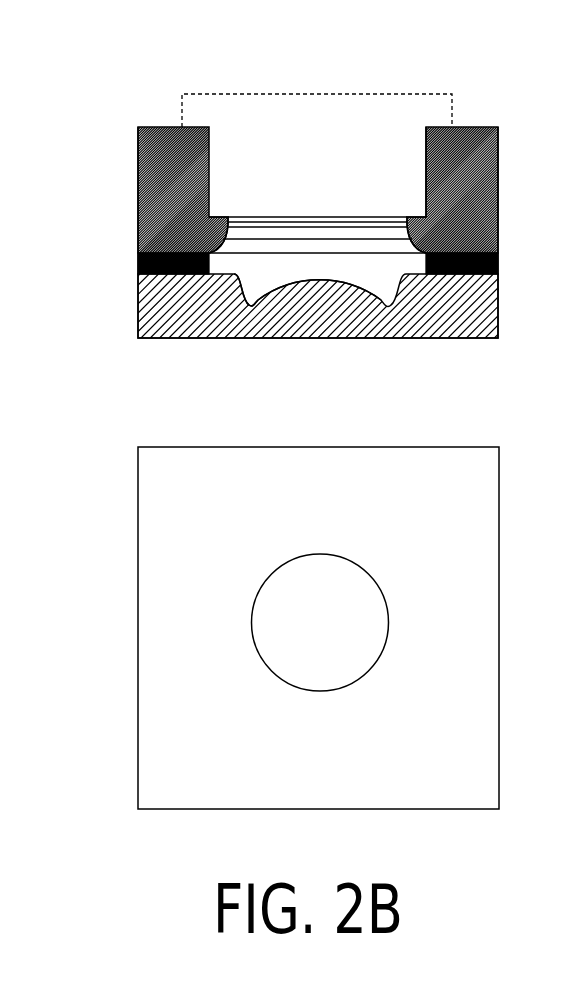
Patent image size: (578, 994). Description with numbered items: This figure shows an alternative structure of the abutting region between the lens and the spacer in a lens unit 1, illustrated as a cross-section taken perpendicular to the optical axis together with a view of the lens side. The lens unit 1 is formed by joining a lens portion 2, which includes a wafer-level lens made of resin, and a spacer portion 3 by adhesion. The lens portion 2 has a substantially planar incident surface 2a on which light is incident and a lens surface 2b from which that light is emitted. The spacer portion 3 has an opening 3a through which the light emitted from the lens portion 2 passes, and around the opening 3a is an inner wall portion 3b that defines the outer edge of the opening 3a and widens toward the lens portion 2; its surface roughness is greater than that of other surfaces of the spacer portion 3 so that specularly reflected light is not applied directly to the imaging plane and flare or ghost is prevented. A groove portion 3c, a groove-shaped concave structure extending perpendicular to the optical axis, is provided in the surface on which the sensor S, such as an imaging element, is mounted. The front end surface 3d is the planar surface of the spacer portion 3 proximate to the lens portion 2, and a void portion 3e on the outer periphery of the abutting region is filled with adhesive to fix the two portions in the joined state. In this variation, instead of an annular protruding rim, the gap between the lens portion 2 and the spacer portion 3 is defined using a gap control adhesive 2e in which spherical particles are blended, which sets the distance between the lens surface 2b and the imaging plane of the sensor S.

The lens unit 1 is at (519, 133).
The lens portion 2 is at (138, 306).
The incident surface 2a is at (340, 338).
The lens surface 2b is at (286, 281).
The gap control adhesive 2e is at (138, 262).
The spacer portion 3 is at (138, 194).
The opening 3a is at (340, 253).
The inner wall portion 3b is at (232, 232).
The groove portion 3c is at (426, 192).
The front end surface 3d is at (492, 243).
The void portion 3e is at (498, 260).
The sensor S is at (455, 92).